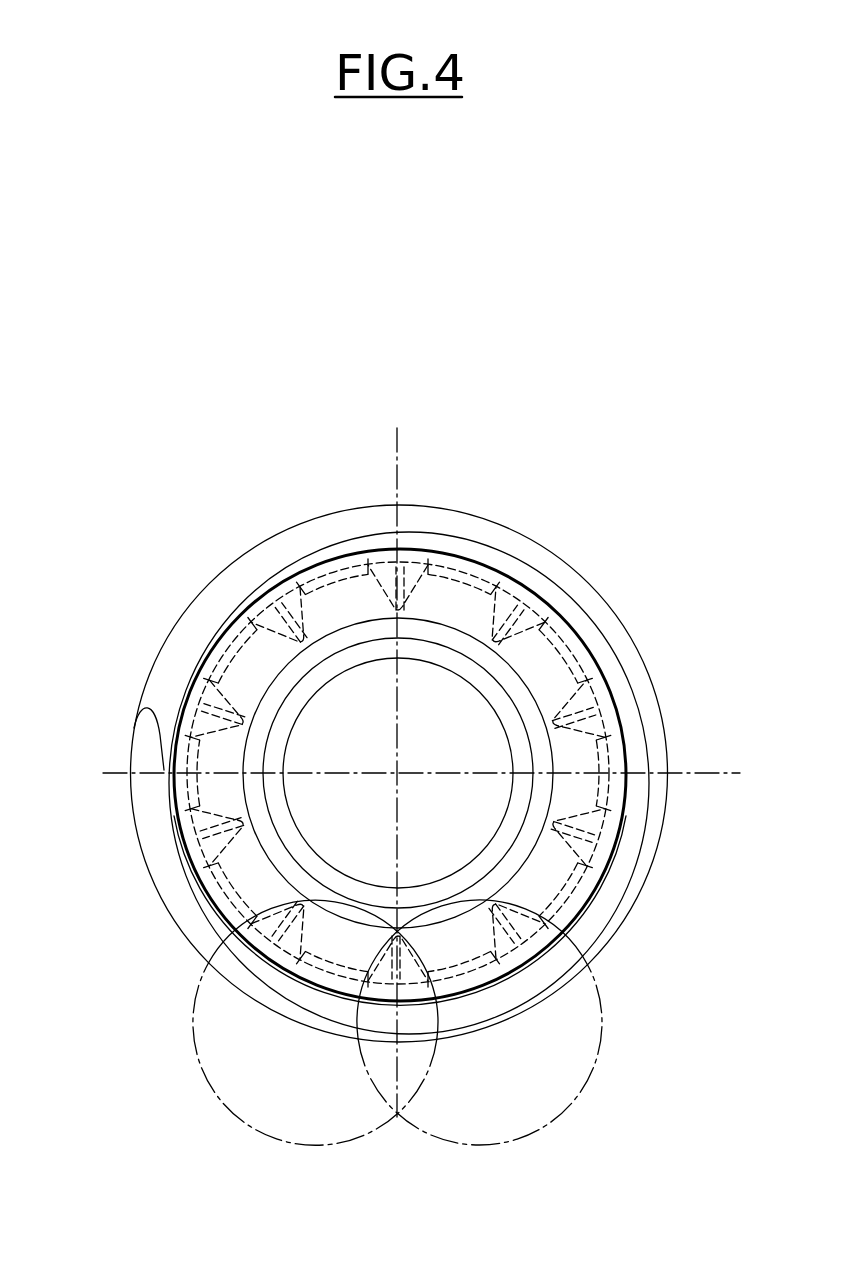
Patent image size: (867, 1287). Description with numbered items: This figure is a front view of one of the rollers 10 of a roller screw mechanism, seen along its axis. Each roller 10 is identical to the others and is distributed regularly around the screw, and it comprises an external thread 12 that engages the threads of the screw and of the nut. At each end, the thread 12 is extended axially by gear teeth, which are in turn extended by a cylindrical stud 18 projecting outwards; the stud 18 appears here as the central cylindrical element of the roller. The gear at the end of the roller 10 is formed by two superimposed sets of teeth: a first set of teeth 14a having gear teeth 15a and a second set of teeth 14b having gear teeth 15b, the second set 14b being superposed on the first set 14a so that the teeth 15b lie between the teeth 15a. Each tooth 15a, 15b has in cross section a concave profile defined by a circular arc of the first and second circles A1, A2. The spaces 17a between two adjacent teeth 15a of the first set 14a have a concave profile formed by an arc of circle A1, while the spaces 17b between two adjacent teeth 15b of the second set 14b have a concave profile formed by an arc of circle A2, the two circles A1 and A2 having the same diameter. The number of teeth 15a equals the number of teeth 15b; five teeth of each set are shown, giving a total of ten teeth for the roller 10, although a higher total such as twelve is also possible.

The roller 10 is at (247, 418).
The external thread 12 is at (158, 850).
The first set of teeth 14a is at (580, 888).
The second set of teeth 14b is at (614, 787).
The gear teeth of the first set 15a is at (348, 588).
The gear teeth of the second set 15b is at (448, 588).
The spaces between adjacent teeth of the first set 17a is at (397, 932).
The spaces between adjacent teeth of the second set 17b is at (397, 932).
The cylindrical stud 18 is at (450, 741).
The first circle A1 is at (575, 1100).
The second circle A2 is at (227, 1107).